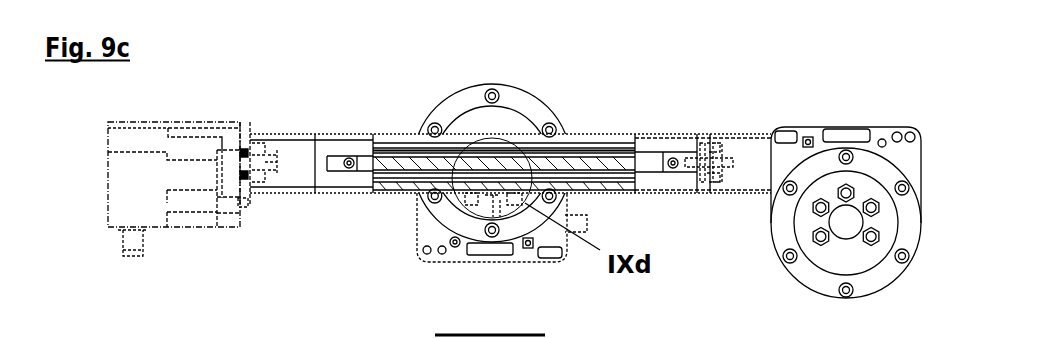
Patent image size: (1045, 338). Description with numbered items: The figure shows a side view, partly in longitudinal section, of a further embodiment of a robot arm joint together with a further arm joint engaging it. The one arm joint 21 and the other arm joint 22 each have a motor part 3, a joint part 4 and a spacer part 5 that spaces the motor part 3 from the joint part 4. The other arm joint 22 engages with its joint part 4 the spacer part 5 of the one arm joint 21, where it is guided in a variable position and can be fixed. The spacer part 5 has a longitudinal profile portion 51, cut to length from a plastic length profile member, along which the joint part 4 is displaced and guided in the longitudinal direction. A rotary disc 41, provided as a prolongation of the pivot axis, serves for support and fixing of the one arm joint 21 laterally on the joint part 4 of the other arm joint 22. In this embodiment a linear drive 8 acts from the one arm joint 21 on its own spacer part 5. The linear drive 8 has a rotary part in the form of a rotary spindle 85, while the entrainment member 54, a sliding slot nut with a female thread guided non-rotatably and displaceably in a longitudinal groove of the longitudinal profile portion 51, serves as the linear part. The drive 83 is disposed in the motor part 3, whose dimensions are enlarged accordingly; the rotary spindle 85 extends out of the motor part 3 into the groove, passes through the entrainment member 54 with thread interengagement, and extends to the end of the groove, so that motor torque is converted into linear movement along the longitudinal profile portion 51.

The arm joint 21 is at (100, 146).
The motor part 3 is at (196, 119).
The drive 83 is at (183, 222).
The arm joint 22 is at (441, 88).
The joint part 4 is at (431, 102).
The rotary disc 41 is at (520, 114).
The longitudinal profile portion 51 is at (610, 136).
The spacer part 5 is at (654, 123).
The rotary spindle 85 is at (620, 188).
The linear drive 8 is at (441, 208).
The entrainment member 54 is at (467, 203).